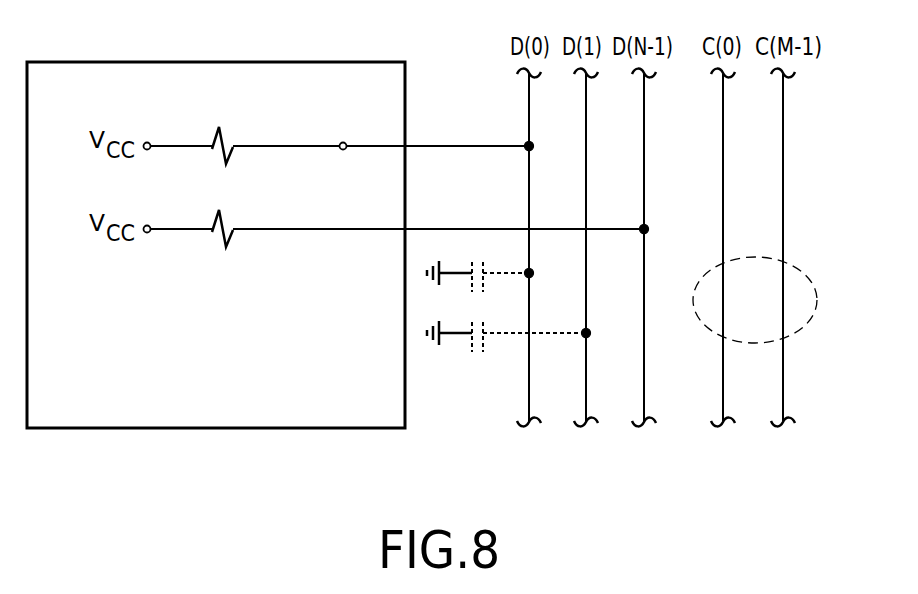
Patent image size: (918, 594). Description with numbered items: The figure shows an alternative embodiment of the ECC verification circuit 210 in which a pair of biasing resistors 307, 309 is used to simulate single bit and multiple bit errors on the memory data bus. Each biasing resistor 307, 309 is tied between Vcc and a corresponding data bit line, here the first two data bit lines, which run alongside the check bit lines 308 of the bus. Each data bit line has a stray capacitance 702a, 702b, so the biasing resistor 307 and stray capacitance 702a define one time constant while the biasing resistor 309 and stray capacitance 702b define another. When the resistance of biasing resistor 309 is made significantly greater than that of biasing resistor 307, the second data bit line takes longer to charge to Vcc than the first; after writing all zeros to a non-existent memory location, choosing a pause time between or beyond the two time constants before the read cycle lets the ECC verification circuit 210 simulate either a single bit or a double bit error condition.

The ECC verification circuit 210 is at (117, 390).
The biasing resistor 307 is at (221, 131).
The biasing resistor 309 is at (221, 214).
The stray capacitance 702a is at (470, 262).
The stray capacitance 702b is at (484, 343).
The check bit lines 308 is at (800, 274).